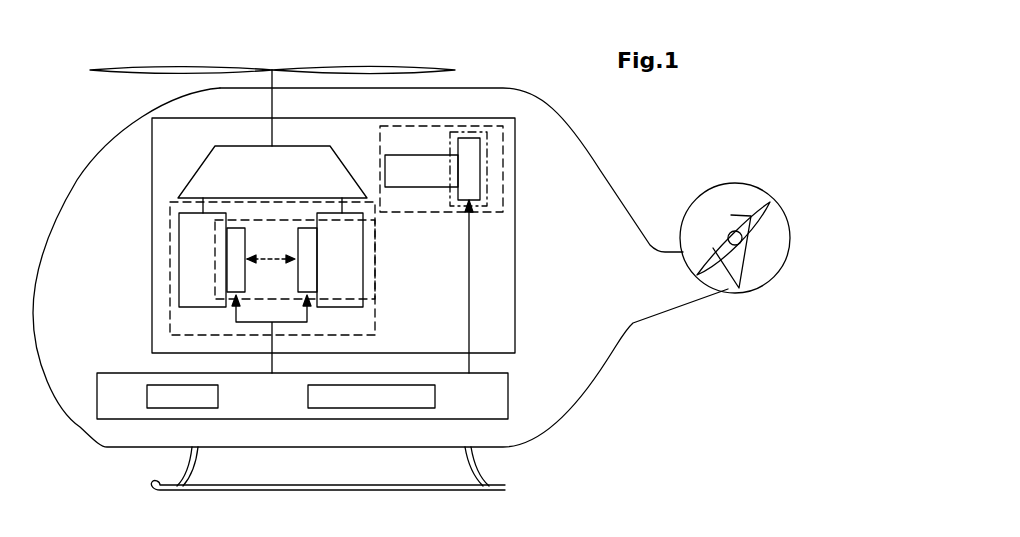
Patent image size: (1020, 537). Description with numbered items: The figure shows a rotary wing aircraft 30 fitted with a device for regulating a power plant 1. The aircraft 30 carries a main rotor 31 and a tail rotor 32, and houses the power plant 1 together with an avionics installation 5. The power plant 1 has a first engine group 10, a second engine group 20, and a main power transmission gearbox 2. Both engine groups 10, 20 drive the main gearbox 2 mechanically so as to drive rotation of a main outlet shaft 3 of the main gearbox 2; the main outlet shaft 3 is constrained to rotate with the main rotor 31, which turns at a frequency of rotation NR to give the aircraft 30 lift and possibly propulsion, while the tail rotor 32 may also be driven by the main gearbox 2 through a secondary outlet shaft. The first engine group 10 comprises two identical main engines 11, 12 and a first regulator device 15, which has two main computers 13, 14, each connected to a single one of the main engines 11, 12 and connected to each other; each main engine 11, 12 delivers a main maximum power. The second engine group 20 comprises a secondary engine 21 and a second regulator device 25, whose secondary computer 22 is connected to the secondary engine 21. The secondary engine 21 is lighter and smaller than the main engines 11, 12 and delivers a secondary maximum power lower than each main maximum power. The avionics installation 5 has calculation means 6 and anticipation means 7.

The power plant 1 is at (515, 292).
The main power transmission gearbox 2 is at (197, 172).
The main outlet shaft 3 is at (272, 133).
The avionics installation 5 is at (508, 392).
The calculation means 6 is at (145, 394).
The anticipation means 7 is at (307, 394).
The first engine group 10 is at (172, 288).
The main engine 11 is at (198, 307).
The main engine 12 is at (337, 307).
The main computer 13 is at (248, 295).
The main computer 14 is at (317, 277).
The first regulator device 15 is at (325, 262).
The second engine group 20 is at (503, 175).
The secondary engine 21 is at (410, 187).
The secondary computer 22 is at (480, 143).
The second regulator device 25 is at (487, 198).
The rotary wing aircraft 30 is at (688, 375).
The main rotor 31 is at (405, 67).
The tail rotor 32 is at (763, 187).